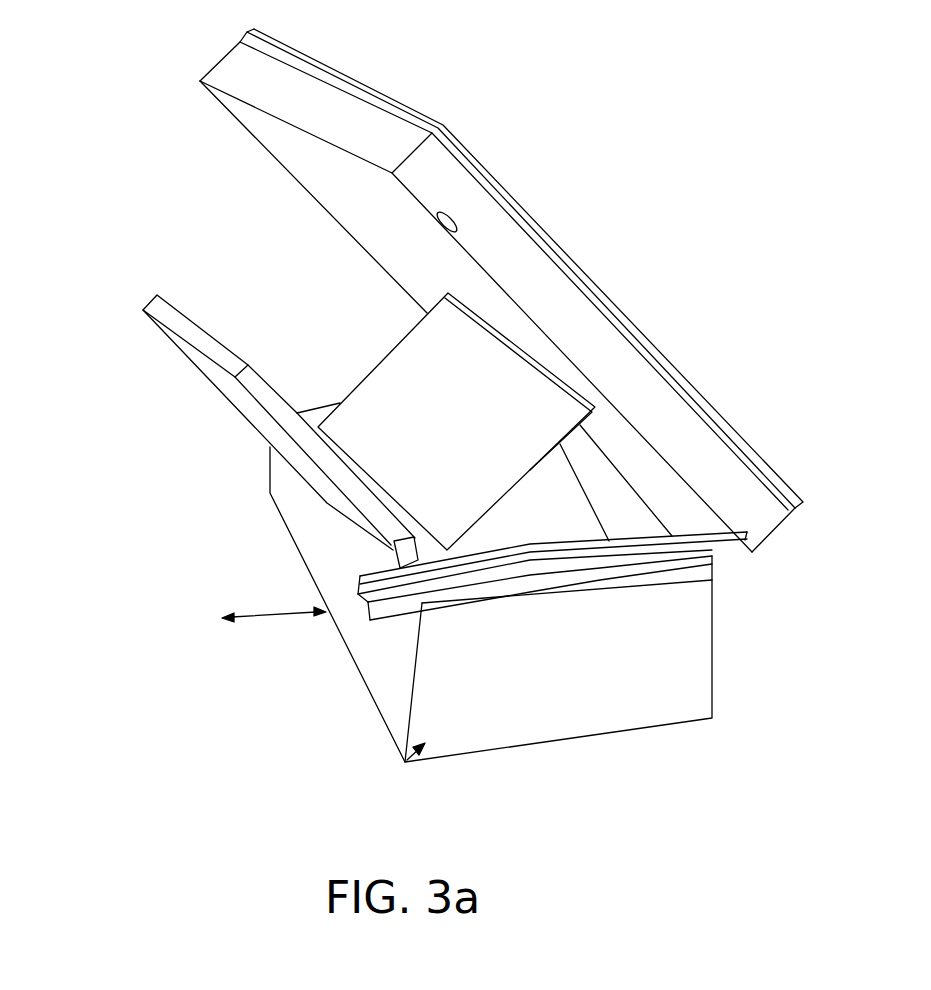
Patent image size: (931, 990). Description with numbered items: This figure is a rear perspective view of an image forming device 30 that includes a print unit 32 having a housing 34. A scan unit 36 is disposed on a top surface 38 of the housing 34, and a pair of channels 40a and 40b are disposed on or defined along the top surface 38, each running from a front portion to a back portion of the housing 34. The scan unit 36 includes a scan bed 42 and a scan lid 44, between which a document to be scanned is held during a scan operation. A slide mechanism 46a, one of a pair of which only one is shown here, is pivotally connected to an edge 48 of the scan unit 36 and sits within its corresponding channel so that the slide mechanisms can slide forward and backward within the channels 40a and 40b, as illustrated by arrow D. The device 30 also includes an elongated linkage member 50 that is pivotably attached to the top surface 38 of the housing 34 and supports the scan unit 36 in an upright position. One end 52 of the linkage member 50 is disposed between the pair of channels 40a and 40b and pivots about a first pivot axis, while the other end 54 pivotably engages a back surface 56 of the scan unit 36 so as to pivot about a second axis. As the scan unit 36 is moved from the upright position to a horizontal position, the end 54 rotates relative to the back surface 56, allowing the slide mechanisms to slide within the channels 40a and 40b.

The image forming device 30 is at (94, 100).
The print unit 32 is at (403, 763).
The housing 34 is at (750, 668).
The scan unit 36 is at (688, 192).
The top surface 38 is at (648, 590).
The channel 40a is at (358, 585).
The channel 40b is at (337, 383).
The scan bed 42 is at (218, 57).
The scan lid 44 is at (340, 72).
The slide mechanism 46a is at (733, 556).
The edge 48 is at (752, 553).
The elongated linkage member 50 is at (427, 388).
The one end 52 is at (400, 488).
The other end 54 is at (524, 342).
The back surface 56 is at (293, 162).
The arrow D is at (287, 615).